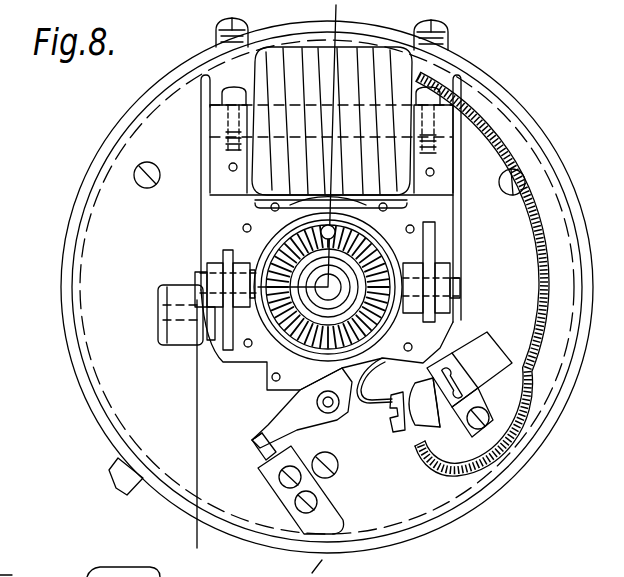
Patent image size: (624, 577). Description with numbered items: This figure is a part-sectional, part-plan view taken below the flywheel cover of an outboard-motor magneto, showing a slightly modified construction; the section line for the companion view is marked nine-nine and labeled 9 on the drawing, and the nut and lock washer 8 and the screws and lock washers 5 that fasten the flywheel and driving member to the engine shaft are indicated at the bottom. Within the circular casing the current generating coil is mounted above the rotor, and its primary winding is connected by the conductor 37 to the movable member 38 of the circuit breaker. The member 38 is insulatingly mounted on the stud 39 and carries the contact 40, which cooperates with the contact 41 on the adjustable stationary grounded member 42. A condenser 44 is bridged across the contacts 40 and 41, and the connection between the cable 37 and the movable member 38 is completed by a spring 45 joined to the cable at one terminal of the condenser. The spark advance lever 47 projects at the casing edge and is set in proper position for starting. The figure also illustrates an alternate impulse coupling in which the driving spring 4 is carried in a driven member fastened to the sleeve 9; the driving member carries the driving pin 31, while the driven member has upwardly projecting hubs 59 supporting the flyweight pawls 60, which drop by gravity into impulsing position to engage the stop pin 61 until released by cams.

The driving spring 4 is at (278, 256).
The screws and lock washers 5 is at (263, 576).
The nut and lock washer 8 is at (368, 563).
The sleeve 9 is at (336, 7).
The driving pin 31 is at (336, 228).
The conductor 37 is at (540, 258).
The movable member 38 is at (295, 420).
The stud 39 is at (332, 408).
The contact 40 is at (257, 450).
The contact 41 is at (260, 458).
The adjustable stationary grounded member 42 is at (290, 500).
The condenser 44 is at (492, 340).
The spring 45 is at (377, 402).
The spark advance lever 47 is at (123, 468).
The hubs 59 is at (218, 264).
The flyweight pawls 60 is at (229, 352).
The stop pin 61 is at (213, 330).